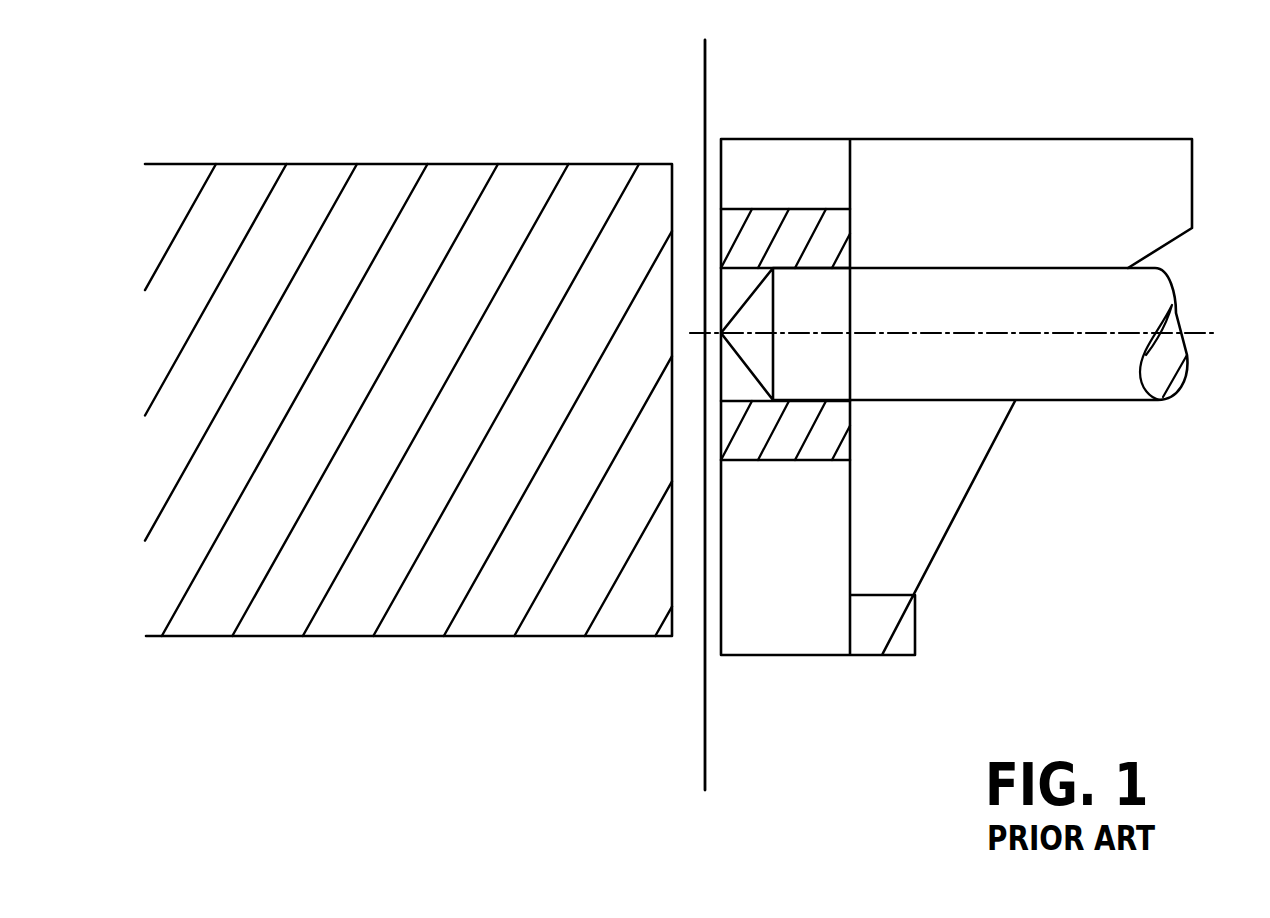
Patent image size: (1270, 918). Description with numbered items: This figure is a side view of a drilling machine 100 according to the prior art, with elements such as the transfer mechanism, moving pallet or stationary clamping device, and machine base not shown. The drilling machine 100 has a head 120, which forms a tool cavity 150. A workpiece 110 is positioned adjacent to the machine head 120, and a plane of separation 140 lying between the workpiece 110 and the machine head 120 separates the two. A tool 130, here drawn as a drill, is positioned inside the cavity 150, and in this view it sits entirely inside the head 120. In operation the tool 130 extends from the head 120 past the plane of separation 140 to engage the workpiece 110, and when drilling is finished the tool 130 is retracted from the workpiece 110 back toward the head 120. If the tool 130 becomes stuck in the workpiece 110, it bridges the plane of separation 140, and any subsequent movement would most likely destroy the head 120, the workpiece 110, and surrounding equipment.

The drilling machine 100 is at (1260, 105).
The workpiece 110 is at (360, 200).
The head 120 is at (940, 182).
The tool 130 is at (1040, 380).
The plane of separation 140 is at (705, 765).
The tool cavity 150 is at (736, 288).